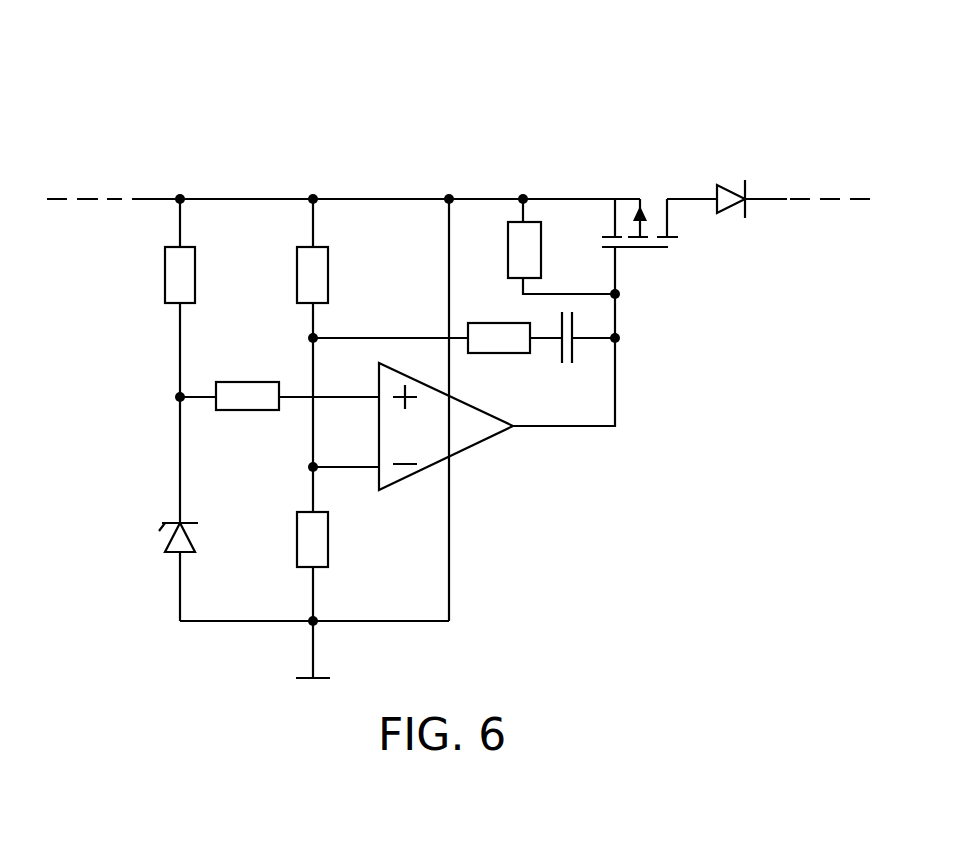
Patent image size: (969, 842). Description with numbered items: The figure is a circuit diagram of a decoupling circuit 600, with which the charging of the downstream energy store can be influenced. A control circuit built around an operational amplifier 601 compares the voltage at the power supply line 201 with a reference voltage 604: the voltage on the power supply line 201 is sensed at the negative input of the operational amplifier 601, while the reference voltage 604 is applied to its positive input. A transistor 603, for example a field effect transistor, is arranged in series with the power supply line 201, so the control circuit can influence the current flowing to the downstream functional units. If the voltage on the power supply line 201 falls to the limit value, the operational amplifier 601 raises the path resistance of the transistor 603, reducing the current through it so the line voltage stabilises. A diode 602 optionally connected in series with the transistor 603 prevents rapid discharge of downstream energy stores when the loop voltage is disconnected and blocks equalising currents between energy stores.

The decoupling circuit 600 is at (738, 108).
The power supply line 201 is at (154, 201).
The operational amplifier 601 is at (467, 432).
The diode 602 is at (733, 206).
The transistor 603 is at (622, 198).
The reference voltage 604 is at (172, 397).